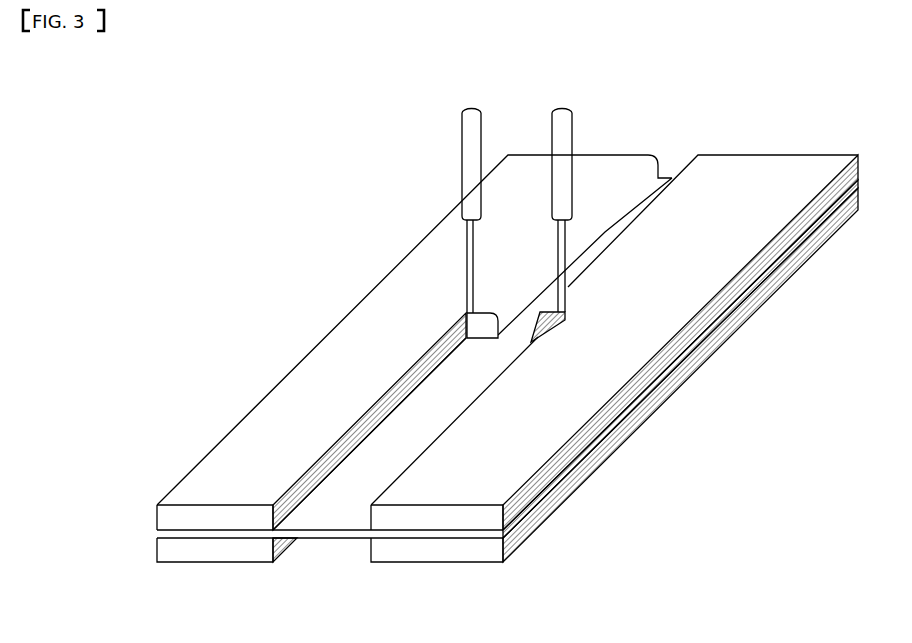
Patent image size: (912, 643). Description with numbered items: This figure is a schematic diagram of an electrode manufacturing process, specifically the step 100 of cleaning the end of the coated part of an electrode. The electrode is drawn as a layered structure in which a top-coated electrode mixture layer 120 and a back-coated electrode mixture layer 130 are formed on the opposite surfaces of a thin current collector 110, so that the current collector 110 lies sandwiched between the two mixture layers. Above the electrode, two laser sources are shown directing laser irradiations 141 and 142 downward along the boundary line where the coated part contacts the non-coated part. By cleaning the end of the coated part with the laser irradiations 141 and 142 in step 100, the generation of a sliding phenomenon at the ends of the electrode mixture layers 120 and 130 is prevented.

The step of cleaning the end of the coated part 100 is at (487, 358).
The current collector 110 is at (326, 541).
The top-coated electrode mixture layer 120 is at (606, 437).
The back-coated electrode mixture layer 130 is at (590, 490).
The laser irradiation 141 is at (461, 152).
The laser irradiation 142 is at (573, 148).